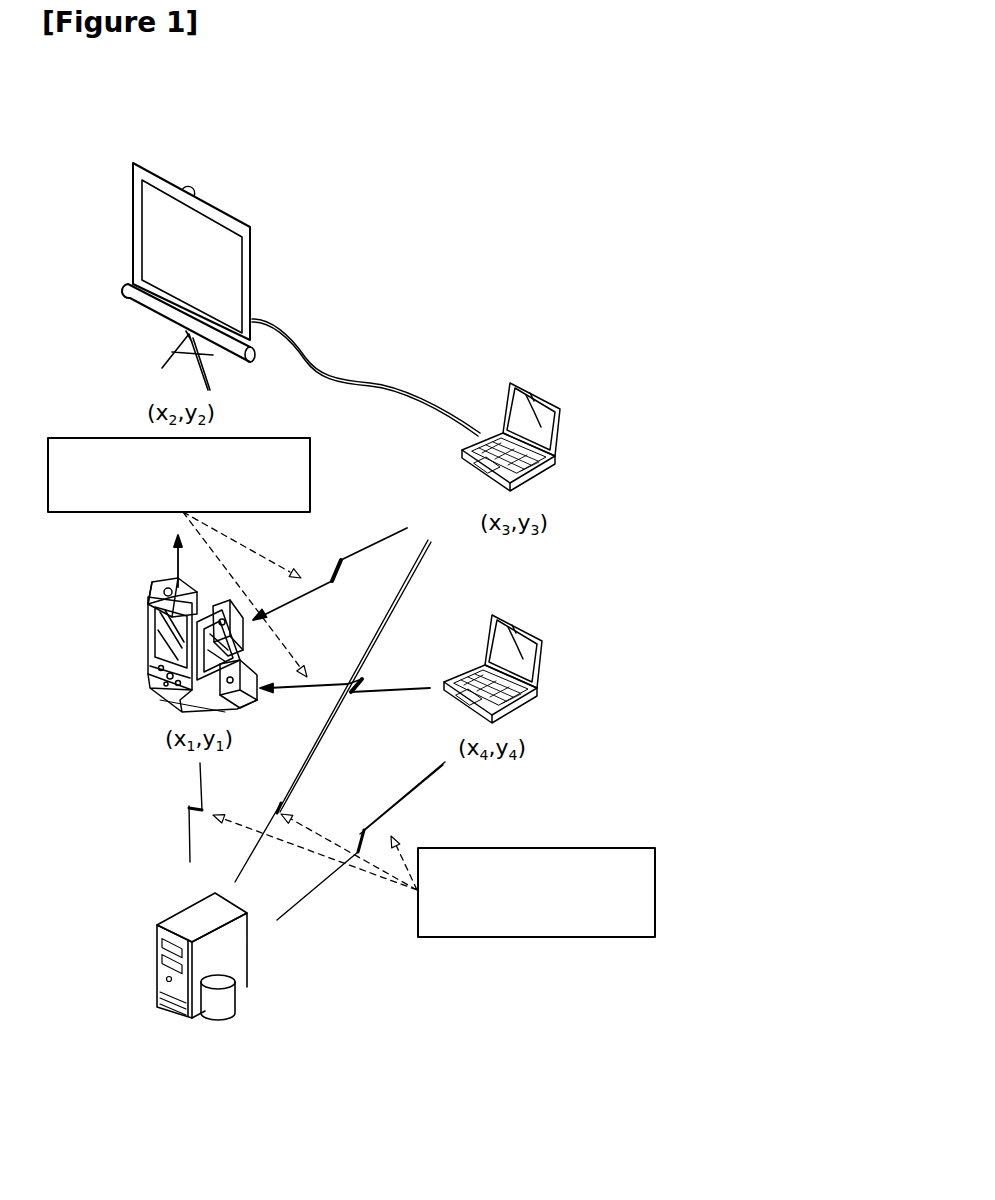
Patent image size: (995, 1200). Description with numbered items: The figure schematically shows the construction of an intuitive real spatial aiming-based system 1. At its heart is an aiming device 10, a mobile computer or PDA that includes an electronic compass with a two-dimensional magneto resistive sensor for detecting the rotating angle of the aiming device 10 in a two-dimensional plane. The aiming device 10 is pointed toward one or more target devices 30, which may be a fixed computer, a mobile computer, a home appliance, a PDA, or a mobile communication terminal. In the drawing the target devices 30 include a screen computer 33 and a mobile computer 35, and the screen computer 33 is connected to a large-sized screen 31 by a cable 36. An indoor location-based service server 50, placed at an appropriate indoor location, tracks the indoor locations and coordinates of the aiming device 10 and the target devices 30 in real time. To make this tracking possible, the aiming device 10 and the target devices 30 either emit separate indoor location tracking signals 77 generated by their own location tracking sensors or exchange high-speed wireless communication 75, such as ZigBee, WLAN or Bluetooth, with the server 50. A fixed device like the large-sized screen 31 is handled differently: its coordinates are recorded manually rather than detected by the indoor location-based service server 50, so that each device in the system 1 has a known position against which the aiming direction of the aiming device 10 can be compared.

The intuitive real spatial aiming-based system 1 is at (553, 152).
The aiming device 10 is at (148, 632).
The target devices 30 is at (603, 282).
The large-sized screen 31 is at (252, 295).
The screen computer 33 is at (525, 392).
The mobile computer 35 is at (543, 638).
The cable 36 is at (374, 382).
The indoor location-based service server 50 is at (247, 940).
The high-speed wireless communication 75 is at (310, 488).
The indoor location tracking signals 77 is at (655, 893).